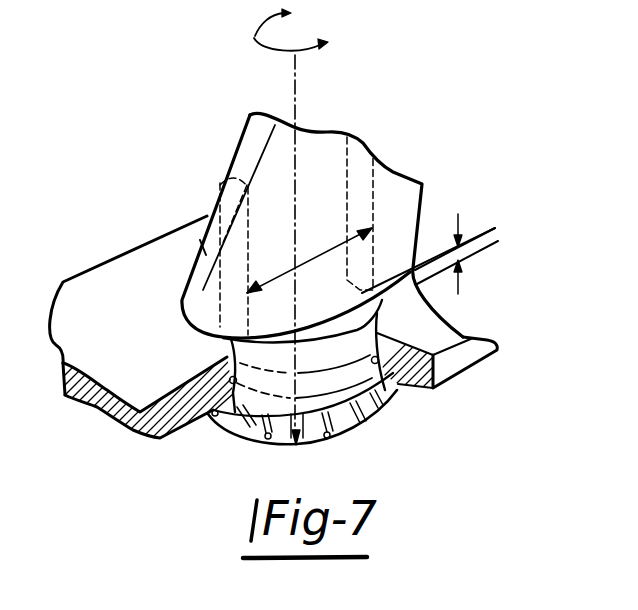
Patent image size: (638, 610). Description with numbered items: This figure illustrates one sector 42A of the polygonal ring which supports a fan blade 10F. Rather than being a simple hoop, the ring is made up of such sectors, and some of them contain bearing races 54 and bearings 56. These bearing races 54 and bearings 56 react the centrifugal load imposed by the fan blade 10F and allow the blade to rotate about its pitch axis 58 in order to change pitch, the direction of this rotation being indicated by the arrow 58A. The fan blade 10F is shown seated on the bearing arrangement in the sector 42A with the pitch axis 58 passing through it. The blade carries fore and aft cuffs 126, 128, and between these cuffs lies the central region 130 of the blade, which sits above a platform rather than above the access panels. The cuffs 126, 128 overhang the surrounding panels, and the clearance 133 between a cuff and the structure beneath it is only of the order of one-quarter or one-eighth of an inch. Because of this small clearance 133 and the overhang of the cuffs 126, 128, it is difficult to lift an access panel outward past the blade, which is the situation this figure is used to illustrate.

The fan blade 10F is at (334, 222).
The sector of the ring 42A is at (141, 332).
The bearing race 54 is at (390, 383).
The bearing 56 is at (233, 398).
The pitch axis 58 is at (297, 80).
The arrow 58A is at (255, 40).
The fore cuff 126 is at (203, 248).
The aft cuff 128 is at (395, 190).
The central region of the blade 130 is at (309, 260).
The clearance 133 is at (458, 214).